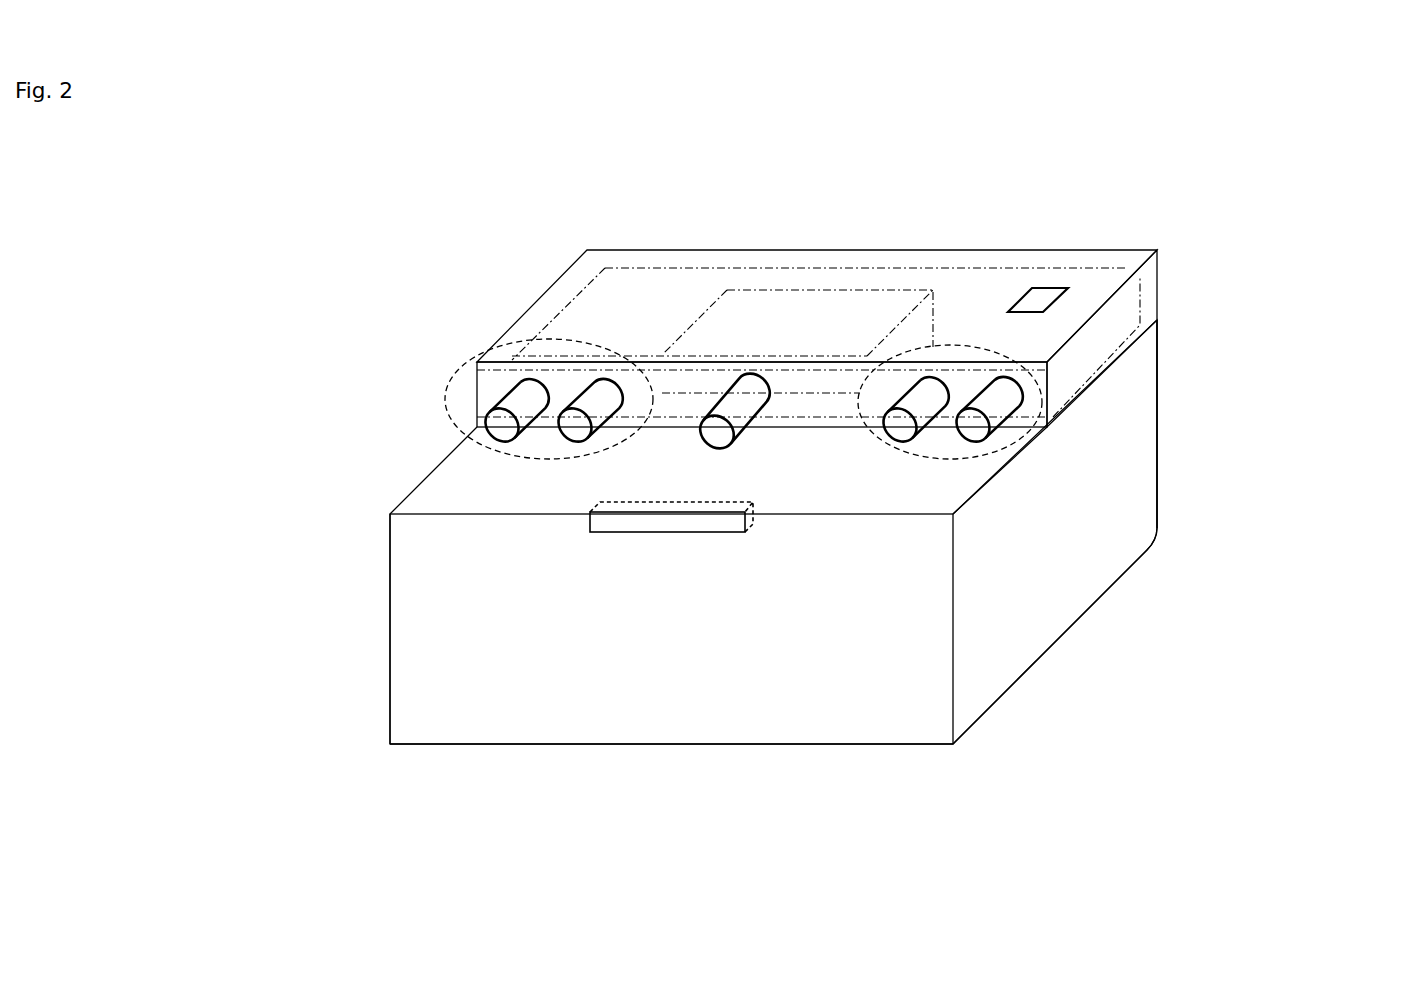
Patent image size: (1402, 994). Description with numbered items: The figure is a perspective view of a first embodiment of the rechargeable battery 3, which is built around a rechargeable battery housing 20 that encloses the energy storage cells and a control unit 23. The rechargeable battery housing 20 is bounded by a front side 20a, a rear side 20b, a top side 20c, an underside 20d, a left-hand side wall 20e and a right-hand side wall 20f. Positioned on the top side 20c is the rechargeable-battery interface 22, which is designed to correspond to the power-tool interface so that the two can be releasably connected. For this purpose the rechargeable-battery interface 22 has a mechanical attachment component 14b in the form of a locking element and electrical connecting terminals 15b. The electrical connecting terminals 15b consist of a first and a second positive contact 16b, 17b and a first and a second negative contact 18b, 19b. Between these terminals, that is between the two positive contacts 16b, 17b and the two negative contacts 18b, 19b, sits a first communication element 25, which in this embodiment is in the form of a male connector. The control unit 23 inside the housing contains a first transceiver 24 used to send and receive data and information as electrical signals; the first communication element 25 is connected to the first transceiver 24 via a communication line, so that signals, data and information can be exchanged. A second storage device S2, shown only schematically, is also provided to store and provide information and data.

The rechargeable battery housing 20 is at (764, 598).
The front side 20a is at (650, 710).
The rear side 20b is at (1180, 387).
The top side 20c is at (483, 472).
The underside 20d is at (472, 765).
The left-hand side wall 20e is at (362, 653).
The right-hand side wall 20f is at (1062, 573).
The rechargeable battery 3 is at (1140, 747).
The rechargeable-battery interface 22 is at (1157, 283).
The control unit 23 is at (588, 322).
The first transceiver 24 is at (913, 303).
The second storage device S2 is at (1040, 297).
The electrical connecting terminals 15b is at (950, 347).
The first positive contact 16b is at (503, 393).
The second positive contact 17b is at (593, 398).
The first negative contact 18b is at (913, 430).
The second negative contact 19b is at (993, 402).
The first communication element 25 is at (748, 408).
The mechanical attachment component 14b is at (590, 519).